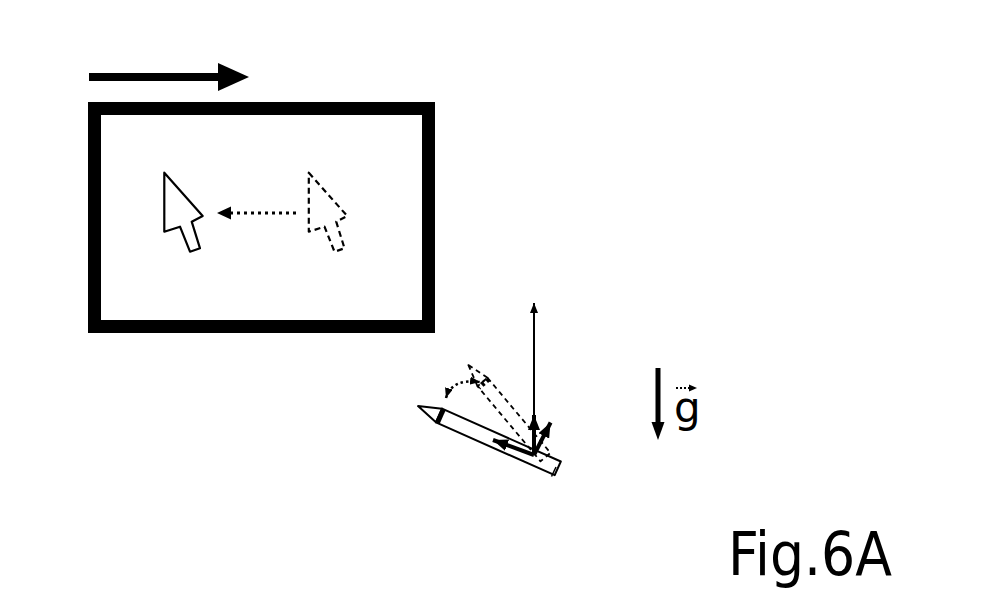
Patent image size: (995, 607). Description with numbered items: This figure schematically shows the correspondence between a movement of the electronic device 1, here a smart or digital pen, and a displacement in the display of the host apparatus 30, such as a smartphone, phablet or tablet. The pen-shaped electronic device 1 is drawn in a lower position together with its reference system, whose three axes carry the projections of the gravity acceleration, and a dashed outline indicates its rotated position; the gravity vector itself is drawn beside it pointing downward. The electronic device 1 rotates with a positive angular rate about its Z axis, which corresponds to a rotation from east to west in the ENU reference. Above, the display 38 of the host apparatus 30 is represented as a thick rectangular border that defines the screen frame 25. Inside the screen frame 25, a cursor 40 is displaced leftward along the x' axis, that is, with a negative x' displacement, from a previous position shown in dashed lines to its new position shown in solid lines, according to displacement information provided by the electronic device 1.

The electronic device 1 is at (458, 440).
The screen frame 25 is at (394, 250).
The host apparatus 30 is at (232, 168).
The display 38 is at (87, 164).
The cursor 40 is at (173, 194).